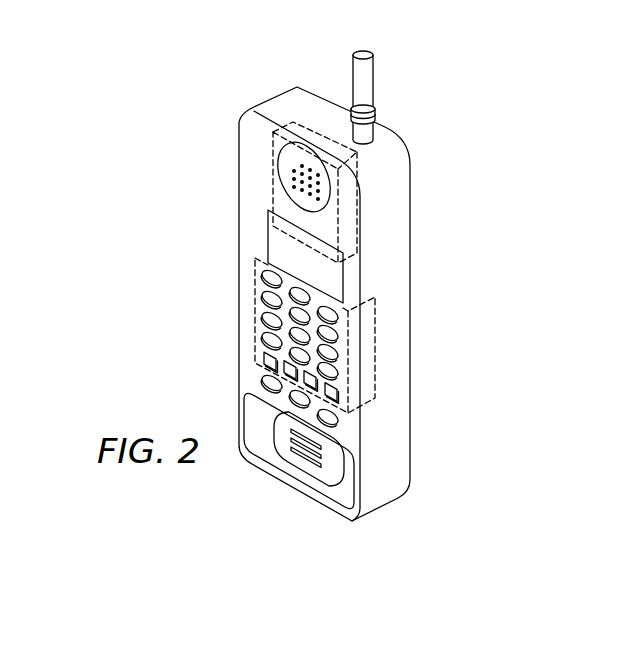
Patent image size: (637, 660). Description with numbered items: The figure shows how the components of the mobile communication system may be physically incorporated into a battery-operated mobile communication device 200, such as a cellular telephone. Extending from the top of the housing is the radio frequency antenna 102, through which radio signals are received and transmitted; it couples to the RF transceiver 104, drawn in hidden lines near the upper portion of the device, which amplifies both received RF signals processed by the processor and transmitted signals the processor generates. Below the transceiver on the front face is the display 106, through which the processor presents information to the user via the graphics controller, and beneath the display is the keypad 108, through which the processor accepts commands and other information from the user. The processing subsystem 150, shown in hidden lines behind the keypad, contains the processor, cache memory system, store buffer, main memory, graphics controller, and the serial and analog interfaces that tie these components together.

The radio frequency antenna 102 is at (367, 82).
The RF transceiver 104 is at (273, 190).
The display 106 is at (268, 243).
The keypad 108 is at (262, 322).
The processing subsystem 150 is at (376, 358).
The mobile communication device 200 is at (402, 442).